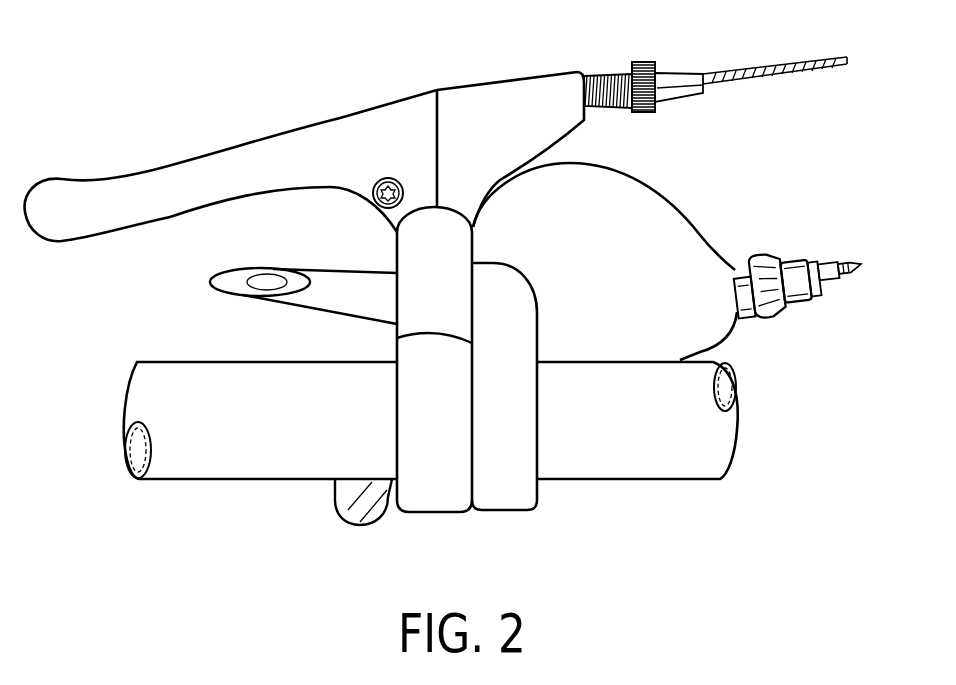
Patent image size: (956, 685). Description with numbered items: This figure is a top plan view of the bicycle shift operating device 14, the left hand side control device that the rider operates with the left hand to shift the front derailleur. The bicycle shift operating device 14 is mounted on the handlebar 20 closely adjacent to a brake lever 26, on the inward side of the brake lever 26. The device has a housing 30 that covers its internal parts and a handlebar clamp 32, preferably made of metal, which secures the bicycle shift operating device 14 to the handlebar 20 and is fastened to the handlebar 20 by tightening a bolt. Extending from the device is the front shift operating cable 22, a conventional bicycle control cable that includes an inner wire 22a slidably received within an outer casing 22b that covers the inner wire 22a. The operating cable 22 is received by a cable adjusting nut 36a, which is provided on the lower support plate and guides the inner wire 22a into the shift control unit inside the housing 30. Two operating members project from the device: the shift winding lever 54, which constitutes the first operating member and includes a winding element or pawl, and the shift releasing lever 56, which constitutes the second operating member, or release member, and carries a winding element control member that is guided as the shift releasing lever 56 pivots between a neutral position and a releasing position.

The bicycle shift operating device 14 is at (730, 200).
The handlebar 20 is at (263, 480).
The operating cable 22 is at (800, 299).
The inner wire 22a is at (852, 282).
The outer casing 22b is at (821, 302).
The brake lever 26 is at (368, 105).
The housing 30 is at (652, 182).
The handlebar clamp 32 is at (533, 432).
The cable adjusting nut 36a is at (777, 318).
The shift operating (winding) lever 54 is at (340, 515).
The shift operating (releasing) lever 56 is at (243, 297).